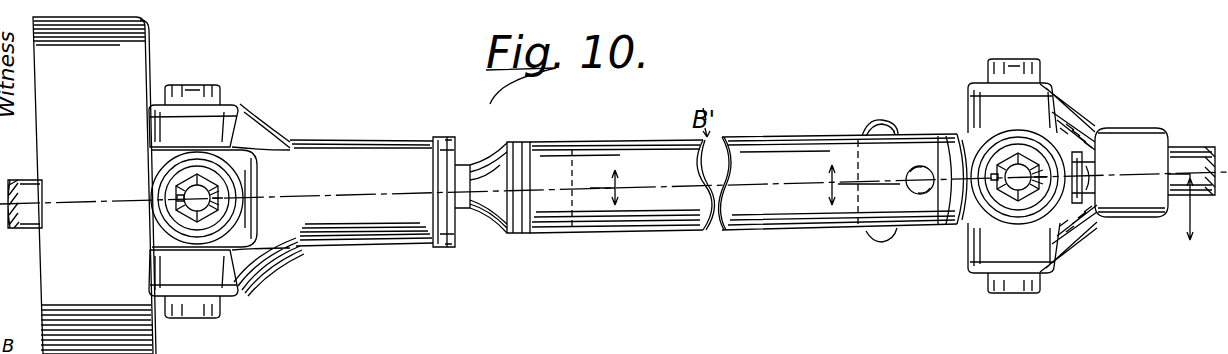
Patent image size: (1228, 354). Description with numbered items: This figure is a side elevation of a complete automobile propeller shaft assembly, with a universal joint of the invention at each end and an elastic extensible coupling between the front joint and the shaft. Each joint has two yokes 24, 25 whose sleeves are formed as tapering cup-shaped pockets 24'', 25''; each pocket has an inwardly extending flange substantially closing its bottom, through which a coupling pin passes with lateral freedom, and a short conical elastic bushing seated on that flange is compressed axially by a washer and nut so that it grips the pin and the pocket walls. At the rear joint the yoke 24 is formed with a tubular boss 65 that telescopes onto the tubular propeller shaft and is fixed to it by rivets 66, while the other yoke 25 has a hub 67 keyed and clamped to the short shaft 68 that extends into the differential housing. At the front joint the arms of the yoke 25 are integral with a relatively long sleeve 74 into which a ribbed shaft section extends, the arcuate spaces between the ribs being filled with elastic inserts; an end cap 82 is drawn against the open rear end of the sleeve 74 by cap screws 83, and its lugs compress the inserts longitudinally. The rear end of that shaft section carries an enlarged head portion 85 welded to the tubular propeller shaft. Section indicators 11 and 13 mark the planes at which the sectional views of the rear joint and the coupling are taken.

The propeller shaft 11 is at (1013, 202).
The tubular shaft section 13 is at (621, 187).
The yoke 24 is at (845, 165).
The cup-shaped pocket 24'' is at (176, 201).
The yoke 25 is at (701, 190).
The cup-shaped pocket 25'' is at (236, 201).
The tubular boss 65 is at (855, 134).
The rivets 66 is at (908, 175).
The hub 67 is at (1160, 133).
The shaft 68 is at (1198, 145).
The sleeve 74 is at (304, 240).
The end cap 82 is at (443, 215).
The cap screws 83 is at (470, 172).
The enlarged head portion 85 is at (590, 146).